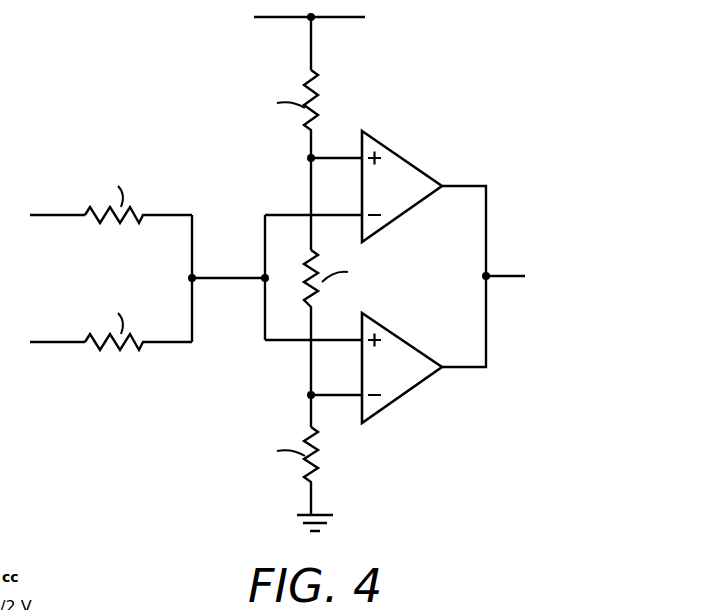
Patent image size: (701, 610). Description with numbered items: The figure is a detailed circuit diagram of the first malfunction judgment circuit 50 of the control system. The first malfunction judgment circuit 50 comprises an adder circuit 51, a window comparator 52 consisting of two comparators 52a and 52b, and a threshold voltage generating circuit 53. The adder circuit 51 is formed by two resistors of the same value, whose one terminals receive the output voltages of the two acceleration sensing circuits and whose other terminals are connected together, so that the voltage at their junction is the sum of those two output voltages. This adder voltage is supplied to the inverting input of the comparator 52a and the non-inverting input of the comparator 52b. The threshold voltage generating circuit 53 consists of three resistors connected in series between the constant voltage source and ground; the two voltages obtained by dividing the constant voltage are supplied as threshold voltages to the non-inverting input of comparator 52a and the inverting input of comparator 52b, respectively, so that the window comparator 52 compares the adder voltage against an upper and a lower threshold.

The first malfunction judgment circuit 50 is at (443, 262).
The adder circuit 51 is at (80, 188).
The window comparator 52 is at (470, 170).
The comparator 52a is at (388, 146).
The comparator 52b is at (401, 396).
The threshold voltage generating circuit 53 is at (268, 135).